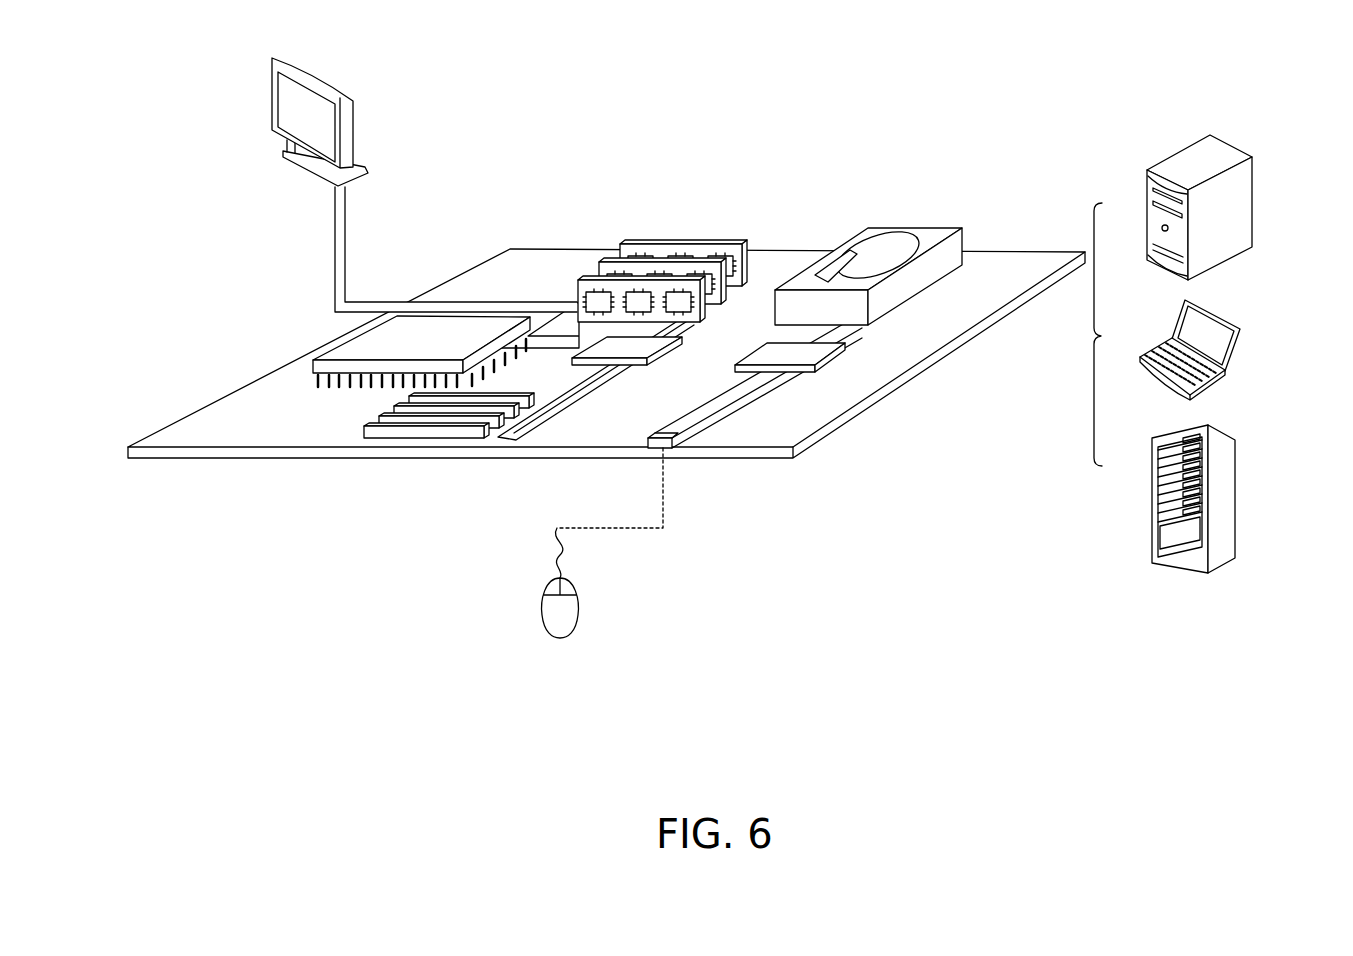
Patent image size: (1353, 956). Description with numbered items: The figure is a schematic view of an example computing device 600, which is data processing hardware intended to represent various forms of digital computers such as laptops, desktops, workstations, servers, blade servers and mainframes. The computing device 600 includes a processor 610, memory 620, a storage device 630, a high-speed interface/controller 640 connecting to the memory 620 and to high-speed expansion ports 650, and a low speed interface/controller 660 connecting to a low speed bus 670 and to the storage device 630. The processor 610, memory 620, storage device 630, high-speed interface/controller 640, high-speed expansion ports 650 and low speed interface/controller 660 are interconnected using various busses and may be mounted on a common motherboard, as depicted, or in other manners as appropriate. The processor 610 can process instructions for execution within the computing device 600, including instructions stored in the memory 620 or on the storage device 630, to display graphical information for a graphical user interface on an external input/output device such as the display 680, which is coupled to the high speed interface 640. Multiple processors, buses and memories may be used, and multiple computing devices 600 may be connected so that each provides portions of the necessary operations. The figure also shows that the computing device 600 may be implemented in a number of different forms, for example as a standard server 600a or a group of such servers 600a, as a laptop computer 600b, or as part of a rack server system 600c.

The computing device 600 is at (753, 120).
The standard server 600a is at (1170, 155).
The laptop computer 600b is at (1224, 321).
The rack server system 600c is at (1228, 482).
The processor 610 is at (313, 362).
The memory 620 is at (682, 244).
The storage device 630 is at (912, 228).
The high-speed interface/controller 640 is at (633, 365).
The high-speed expansion ports 650 is at (365, 428).
The low speed interface/controller 660 is at (758, 352).
The low speed bus 670 is at (676, 450).
The display 680 is at (268, 102).